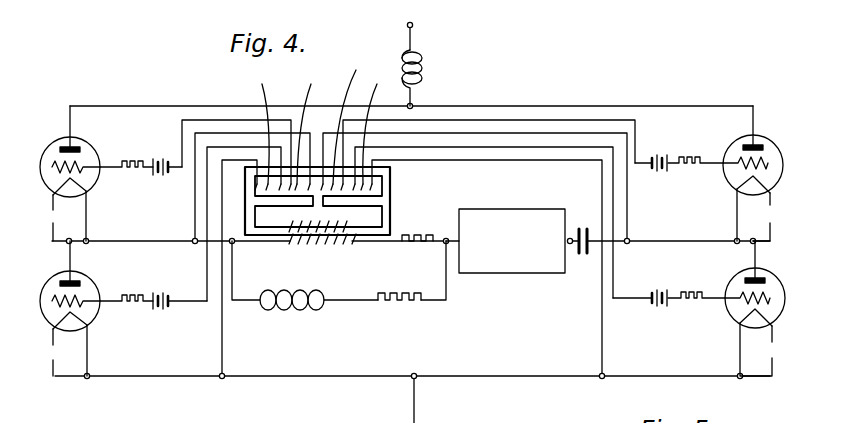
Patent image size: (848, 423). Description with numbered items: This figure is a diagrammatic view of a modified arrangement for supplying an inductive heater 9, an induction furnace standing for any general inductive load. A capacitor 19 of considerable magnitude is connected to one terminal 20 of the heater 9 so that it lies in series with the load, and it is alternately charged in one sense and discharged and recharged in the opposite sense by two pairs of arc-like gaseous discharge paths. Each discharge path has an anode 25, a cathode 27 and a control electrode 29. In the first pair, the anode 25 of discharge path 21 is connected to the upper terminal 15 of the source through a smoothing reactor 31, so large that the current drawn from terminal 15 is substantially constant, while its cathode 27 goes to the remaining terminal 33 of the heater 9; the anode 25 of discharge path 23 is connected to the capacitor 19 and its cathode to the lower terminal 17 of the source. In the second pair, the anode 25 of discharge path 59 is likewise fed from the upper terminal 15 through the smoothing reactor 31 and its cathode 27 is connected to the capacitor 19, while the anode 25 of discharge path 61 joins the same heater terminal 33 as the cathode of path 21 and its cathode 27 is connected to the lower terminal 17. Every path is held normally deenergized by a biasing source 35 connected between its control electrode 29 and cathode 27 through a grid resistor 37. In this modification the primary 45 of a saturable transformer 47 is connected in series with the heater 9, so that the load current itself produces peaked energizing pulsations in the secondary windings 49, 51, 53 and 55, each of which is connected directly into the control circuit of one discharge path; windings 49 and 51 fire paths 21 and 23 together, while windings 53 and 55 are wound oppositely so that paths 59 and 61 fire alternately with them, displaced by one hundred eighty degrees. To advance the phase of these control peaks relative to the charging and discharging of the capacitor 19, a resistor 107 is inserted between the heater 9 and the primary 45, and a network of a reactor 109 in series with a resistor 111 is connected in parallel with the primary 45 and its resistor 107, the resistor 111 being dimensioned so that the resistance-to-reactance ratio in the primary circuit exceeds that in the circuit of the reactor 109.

The inductive heater 9 is at (524, 209).
The upper terminal 15 is at (414, 25).
The lower terminal 17 is at (430, 421).
The capacitor 19 is at (583, 228).
The terminal 20 is at (573, 254).
The electric discharge path 21 is at (88, 142).
The electric discharge path 23 is at (778, 283).
The anode 25 is at (62, 146).
The cathode 27 is at (82, 183).
The control electrode 29 is at (52, 170).
The smoothing reactor 31 is at (422, 65).
The terminal 33 is at (446, 238).
The biasing source 35 is at (158, 177).
The grid resistor 37 is at (131, 160).
The primary 45 is at (347, 223).
The saturable transformer 47 is at (291, 226).
The secondary winding 49 is at (309, 130).
The secondary winding 51 is at (376, 130).
The secondary winding 53 is at (253, 130).
The secondary winding 55 is at (349, 120).
The electric discharge path 59 is at (784, 151).
The electric discharge path 61 is at (92, 281).
The resistor 107 is at (423, 248).
The reactor 109 is at (282, 290).
The resistor 111 is at (413, 308).